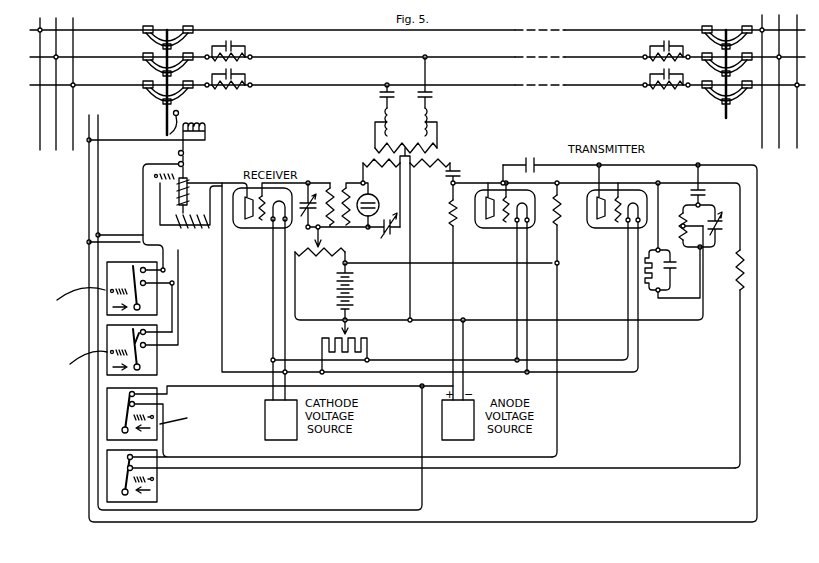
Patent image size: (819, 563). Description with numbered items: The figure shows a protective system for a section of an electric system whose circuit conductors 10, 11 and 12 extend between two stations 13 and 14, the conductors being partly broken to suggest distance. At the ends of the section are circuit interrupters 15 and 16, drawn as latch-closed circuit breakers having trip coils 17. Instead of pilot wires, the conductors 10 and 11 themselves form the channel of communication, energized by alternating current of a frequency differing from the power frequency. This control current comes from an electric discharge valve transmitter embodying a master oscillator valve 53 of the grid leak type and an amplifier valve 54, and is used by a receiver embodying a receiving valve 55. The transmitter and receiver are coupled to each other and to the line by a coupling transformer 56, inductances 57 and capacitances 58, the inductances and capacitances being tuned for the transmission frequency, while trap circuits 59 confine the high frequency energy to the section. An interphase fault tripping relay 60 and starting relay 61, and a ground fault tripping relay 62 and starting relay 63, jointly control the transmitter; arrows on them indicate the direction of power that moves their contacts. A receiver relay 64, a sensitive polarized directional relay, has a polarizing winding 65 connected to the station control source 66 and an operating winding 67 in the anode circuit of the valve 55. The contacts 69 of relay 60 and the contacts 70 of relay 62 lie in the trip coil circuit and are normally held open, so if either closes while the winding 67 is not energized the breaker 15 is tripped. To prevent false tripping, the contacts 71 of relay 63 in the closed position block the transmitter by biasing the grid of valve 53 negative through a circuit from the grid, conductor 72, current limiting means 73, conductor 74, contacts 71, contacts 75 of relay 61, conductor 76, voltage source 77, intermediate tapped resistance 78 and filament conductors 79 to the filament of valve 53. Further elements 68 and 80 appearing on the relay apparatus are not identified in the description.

The circuit conductor 10 is at (339, 86).
The circuit conductor 11 is at (345, 58).
The circuit conductor 12 is at (346, 31).
The station 13 is at (62, 172).
The station 14 is at (787, 172).
The circuit interrupter 15 is at (185, 94).
The circuit interrupter 16 is at (714, 97).
The trip coil 17 is at (202, 122).
The master oscillator valve 53 is at (615, 230).
The amplifier valve 54 is at (504, 230).
The receiving valve 55 is at (258, 230).
The coupling transformer 56 is at (440, 157).
The inductance 57 is at (421, 122).
The capacitance 58 is at (394, 97).
The trap circuit 59 is at (250, 50).
The interphase fault tripping relay 60 is at (99, 310).
The interphase fault starting relay 61 is at (169, 414).
The ground fault tripping relay 62 is at (112, 331).
The ground fault starting relay 63 is at (200, 478).
The receiver relay 64 is at (208, 232).
The polarizing winding 65 is at (192, 232).
The station control source 66 is at (98, 192).
The operating winding 67 is at (178, 186).
The contacts 68 is at (178, 164).
The contacts 69 is at (140, 283).
The contacts 70 is at (160, 345).
The contacts 71 is at (136, 459).
The conductor 72 is at (672, 188).
The current limiting means 73 is at (737, 272).
The conductor 74 is at (547, 470).
The contacts 75 is at (136, 396).
The conductor 76 is at (224, 456).
The voltage source 77 is at (356, 292).
The intermediate tapped resistance 78 is at (360, 342).
The filament conductor 79 is at (405, 360).
The relay armature 80 is at (133, 337).